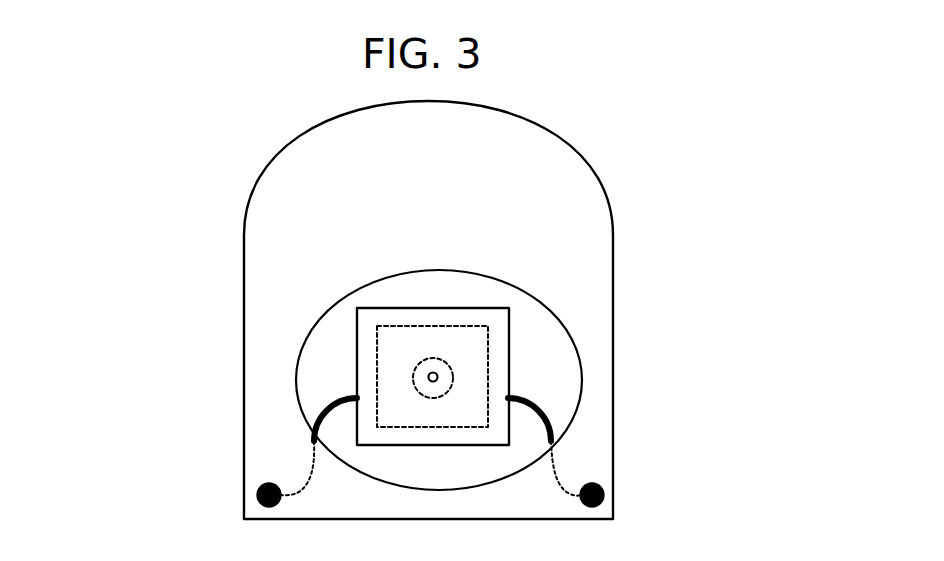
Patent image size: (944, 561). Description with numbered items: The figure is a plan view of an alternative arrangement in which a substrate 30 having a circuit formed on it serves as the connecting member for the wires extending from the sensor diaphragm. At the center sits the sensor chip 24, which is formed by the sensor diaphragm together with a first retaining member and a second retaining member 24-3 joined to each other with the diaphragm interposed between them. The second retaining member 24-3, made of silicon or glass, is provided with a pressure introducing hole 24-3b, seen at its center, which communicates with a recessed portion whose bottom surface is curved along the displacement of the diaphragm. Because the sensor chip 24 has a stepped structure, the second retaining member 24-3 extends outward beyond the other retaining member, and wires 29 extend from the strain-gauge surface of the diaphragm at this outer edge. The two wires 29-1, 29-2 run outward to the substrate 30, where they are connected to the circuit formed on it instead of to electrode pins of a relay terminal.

The substrate 30 is at (571, 206).
The sensor chip 24 is at (450, 317).
The second retaining member 24-3 is at (512, 341).
The pressure introducing hole 24-3b is at (432, 372).
The wires 29 is at (453, 451).
The wire 29-1 is at (331, 405).
The wire 29-2 is at (543, 420).